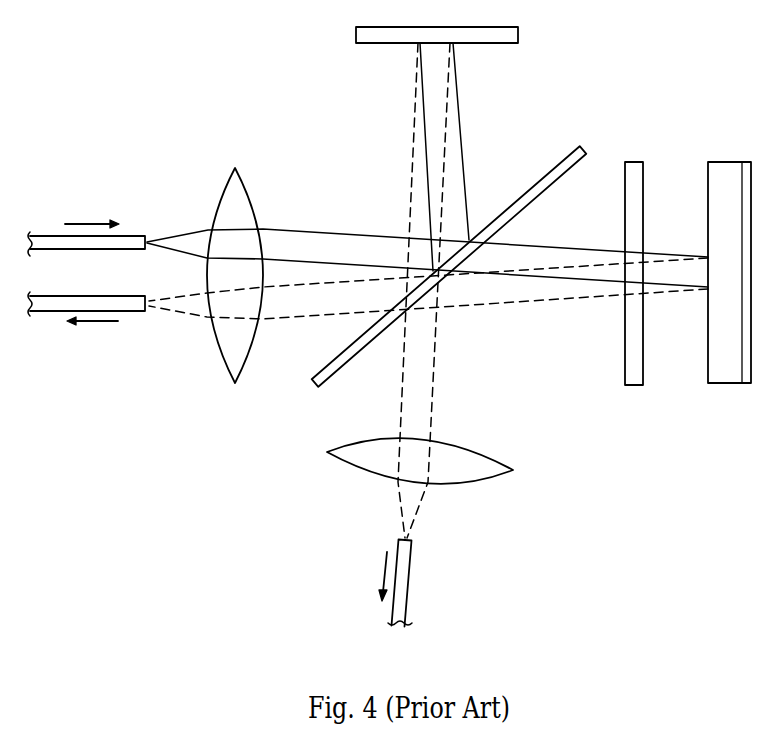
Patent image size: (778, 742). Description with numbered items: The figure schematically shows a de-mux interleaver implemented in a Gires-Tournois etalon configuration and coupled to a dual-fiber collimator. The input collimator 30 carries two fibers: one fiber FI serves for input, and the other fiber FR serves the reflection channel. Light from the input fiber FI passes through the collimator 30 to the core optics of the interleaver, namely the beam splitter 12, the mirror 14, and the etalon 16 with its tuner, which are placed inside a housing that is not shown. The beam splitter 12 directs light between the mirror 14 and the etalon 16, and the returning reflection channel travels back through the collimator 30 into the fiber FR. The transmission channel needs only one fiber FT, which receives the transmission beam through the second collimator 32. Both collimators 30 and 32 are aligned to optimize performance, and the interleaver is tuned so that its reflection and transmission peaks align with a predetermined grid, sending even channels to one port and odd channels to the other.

The beam splitter 12 is at (545, 170).
The mirror 14 is at (387, 44).
The etalon 16 is at (757, 432).
The collimator 30 is at (245, 190).
The collimator 32 is at (486, 458).
The input fiber FI is at (137, 232).
The reflection channel fiber FR is at (136, 312).
The transmission fiber FT is at (412, 576).